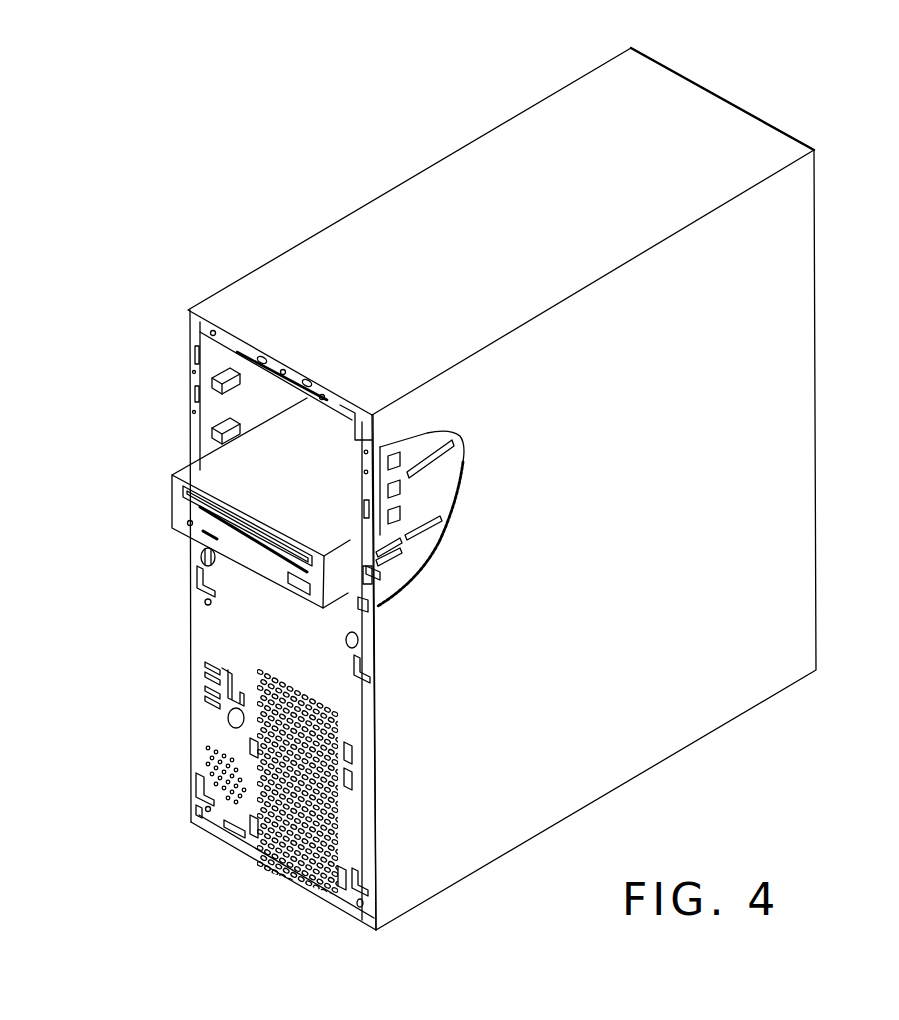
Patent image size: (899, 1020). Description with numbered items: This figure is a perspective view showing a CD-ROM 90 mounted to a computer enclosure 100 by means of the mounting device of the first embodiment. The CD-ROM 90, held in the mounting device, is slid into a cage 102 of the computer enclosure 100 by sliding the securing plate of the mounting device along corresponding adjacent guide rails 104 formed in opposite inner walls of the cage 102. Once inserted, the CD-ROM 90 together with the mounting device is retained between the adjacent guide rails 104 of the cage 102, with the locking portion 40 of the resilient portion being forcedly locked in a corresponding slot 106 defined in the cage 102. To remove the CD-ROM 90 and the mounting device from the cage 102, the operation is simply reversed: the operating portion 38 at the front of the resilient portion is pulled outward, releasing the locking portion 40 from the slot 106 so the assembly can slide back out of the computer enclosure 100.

The computer enclosure 100 is at (772, 127).
The CD-ROM 90 is at (250, 487).
The guide rails 104 is at (222, 430).
The cage 102 is at (433, 490).
The slot 106 is at (370, 577).
The locking portion 40 is at (366, 582).
The operating portion 38 is at (362, 606).